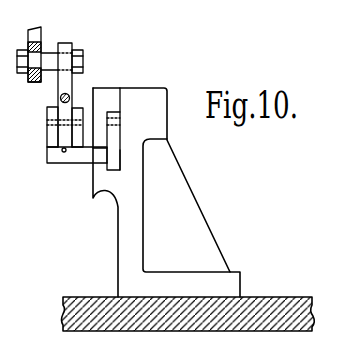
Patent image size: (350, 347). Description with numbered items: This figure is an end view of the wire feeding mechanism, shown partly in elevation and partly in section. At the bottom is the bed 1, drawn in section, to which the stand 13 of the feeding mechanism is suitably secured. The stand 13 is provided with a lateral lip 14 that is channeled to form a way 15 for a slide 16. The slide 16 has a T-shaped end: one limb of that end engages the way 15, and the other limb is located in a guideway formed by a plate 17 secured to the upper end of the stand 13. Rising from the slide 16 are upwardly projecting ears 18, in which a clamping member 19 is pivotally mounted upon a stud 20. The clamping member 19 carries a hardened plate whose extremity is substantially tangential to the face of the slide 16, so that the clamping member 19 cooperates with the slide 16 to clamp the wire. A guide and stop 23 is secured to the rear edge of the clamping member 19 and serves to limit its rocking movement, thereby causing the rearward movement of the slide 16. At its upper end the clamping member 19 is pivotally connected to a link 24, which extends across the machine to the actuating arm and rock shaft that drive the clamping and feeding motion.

The bed 1 is at (279, 297).
The stand 13 is at (198, 252).
The lateral lip 14 is at (100, 177).
The way 15 is at (116, 172).
The slide 16 is at (80, 157).
The plate 17 is at (101, 92).
The ears 18 is at (48, 135).
The clamping member 19 is at (68, 48).
The stud 20 is at (47, 123).
The guide and stop 23 is at (62, 140).
The link 24 is at (33, 35).